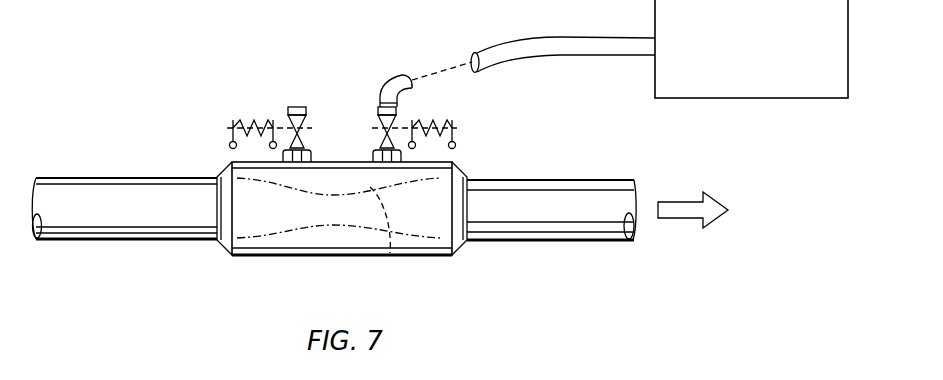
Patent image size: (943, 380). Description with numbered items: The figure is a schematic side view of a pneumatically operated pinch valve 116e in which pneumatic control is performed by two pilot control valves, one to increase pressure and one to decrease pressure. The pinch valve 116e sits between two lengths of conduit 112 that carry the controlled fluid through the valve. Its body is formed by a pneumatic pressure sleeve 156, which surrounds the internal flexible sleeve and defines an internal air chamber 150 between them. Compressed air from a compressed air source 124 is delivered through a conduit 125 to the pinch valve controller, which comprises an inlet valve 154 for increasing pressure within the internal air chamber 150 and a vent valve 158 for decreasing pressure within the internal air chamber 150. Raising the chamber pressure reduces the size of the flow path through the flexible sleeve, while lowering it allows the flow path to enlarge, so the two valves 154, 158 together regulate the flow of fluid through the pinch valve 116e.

The conduit 112 is at (105, 178).
The pneumatically operated pinch valve 116e is at (287, 238).
The pneumatic pressure sleeve 156 is at (303, 257).
The internal air chamber 150 is at (370, 236).
The vent valve 158 is at (240, 112).
The inlet valve 154 is at (443, 109).
The conduit 125 is at (472, 52).
The compressed air source 124 is at (710, 99).